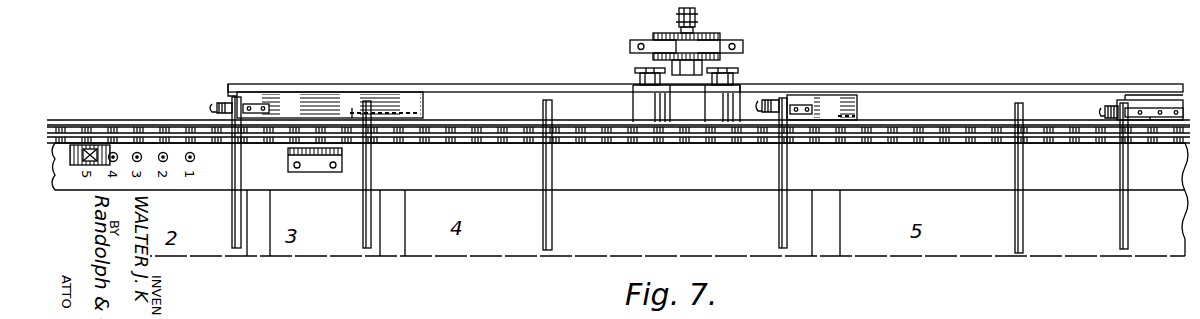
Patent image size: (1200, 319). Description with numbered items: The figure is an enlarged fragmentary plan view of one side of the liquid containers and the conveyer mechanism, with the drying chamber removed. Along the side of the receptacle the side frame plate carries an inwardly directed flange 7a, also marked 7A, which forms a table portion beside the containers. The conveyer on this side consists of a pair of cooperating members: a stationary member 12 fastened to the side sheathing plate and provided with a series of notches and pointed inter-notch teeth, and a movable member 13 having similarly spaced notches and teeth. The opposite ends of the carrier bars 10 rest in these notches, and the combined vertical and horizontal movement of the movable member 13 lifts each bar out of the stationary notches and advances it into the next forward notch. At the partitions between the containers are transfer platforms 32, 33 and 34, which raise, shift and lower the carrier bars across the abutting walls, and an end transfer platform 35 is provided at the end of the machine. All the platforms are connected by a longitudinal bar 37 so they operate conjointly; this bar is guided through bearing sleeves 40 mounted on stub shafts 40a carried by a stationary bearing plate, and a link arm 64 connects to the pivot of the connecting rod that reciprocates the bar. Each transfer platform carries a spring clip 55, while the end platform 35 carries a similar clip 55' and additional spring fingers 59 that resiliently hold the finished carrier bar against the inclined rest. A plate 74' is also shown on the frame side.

The inwardly directed flange 7a is at (965, 178).
The inwardly directed flange 7A is at (97, 145).
The carrier bar 10 is at (232, 214).
The stationary member 12 is at (100, 126).
The movable member 13 is at (140, 136).
The transfer platform 32 is at (277, 110).
The transfer platform 33 is at (353, 110).
The transfer platform 34 is at (824, 115).
The transfer platform 35 is at (1155, 120).
The longitudinal bar 37 is at (524, 76).
The bearing sleeve 40 is at (640, 103).
The stub shaft 40a is at (764, 52).
The spring clip 55 is at (212, 89).
The spring clip 55' is at (1105, 86).
The spring finger 59 is at (1150, 110).
The link arm 64 is at (698, 16).
The plate 74' is at (295, 163).